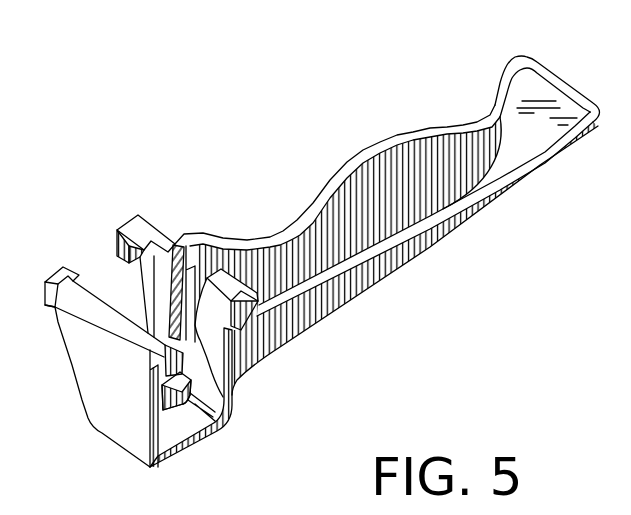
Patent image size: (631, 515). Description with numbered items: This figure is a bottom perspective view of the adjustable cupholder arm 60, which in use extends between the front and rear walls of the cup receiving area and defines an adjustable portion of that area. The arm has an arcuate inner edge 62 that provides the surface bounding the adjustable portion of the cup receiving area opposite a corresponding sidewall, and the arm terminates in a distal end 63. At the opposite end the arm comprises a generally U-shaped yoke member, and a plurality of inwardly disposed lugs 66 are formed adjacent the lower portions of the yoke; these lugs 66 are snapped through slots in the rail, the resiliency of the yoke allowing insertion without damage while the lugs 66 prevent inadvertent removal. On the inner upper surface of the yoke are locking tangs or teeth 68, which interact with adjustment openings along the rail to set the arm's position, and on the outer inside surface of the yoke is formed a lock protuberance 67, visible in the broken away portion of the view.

The adjustable cupholder arm 60 is at (258, 144).
The arcuate inner edge 62 is at (372, 146).
The distal end 63 is at (576, 88).
The inwardly disposed lugs 66 is at (58, 271).
The lock protuberance 67 is at (233, 391).
The locking tangs or teeth 68 is at (162, 390).